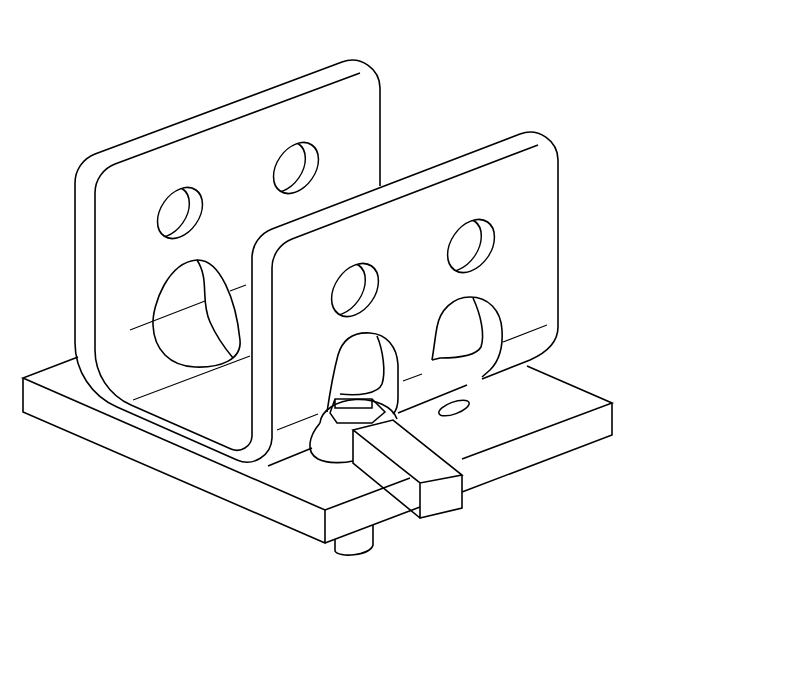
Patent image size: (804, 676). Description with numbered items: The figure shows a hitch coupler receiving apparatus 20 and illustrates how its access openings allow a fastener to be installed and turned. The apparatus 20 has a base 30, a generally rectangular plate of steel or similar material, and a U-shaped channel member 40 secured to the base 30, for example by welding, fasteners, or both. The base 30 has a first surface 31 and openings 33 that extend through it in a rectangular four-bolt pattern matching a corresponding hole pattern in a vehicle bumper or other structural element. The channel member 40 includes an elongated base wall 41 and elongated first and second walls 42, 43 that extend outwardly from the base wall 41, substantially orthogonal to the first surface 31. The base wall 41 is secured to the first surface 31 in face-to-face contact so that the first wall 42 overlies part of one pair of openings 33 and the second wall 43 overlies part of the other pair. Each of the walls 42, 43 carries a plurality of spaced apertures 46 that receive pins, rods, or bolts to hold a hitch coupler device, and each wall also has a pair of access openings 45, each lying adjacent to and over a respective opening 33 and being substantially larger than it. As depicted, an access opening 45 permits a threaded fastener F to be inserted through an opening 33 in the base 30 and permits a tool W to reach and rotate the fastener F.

The hitch coupler receiving apparatus 20 is at (478, 68).
The base 30 is at (612, 396).
The first surface 31 is at (558, 387).
The openings 33 is at (462, 407).
The U-shaped channel member 40 is at (561, 180).
The base wall 41 is at (187, 407).
The first wall 42 is at (283, 80).
The second wall 43 is at (480, 157).
The access openings 45 is at (173, 275).
The apertures 46 is at (188, 200).
The tool W is at (456, 497).
The fastener F is at (372, 543).